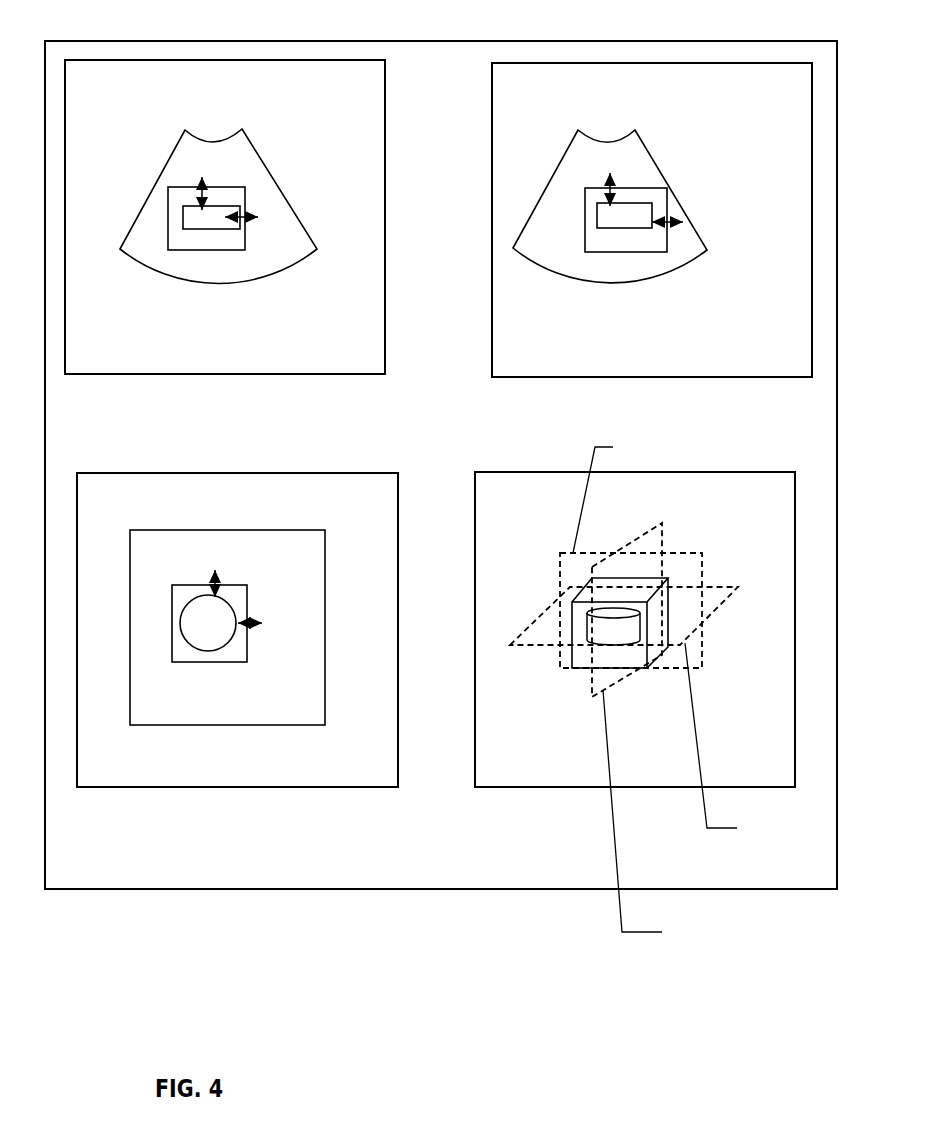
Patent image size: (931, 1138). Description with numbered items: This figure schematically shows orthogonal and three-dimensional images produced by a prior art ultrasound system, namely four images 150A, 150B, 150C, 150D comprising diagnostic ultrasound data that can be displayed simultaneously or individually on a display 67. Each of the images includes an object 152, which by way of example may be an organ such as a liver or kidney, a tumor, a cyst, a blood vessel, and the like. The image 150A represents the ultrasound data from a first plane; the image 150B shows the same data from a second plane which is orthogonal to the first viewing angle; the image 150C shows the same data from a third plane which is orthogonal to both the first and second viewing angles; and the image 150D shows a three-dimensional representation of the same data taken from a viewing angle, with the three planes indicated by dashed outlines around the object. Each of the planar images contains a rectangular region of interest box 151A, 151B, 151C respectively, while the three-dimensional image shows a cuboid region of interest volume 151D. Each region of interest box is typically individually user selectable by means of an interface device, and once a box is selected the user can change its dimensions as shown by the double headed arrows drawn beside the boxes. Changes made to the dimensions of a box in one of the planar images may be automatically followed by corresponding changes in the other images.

The display 67 is at (272, 889).
The image 150A is at (138, 375).
The image 150B is at (573, 378).
The image 150C is at (138, 788).
The image 150D is at (562, 790).
The rectangular region of interest box 151A is at (245, 195).
The rectangular region of interest box 151B is at (665, 200).
The rectangular region of interest box 151C is at (207, 651).
The cuboid region of interest volume 151D is at (648, 580).
The object 152 is at (195, 230).